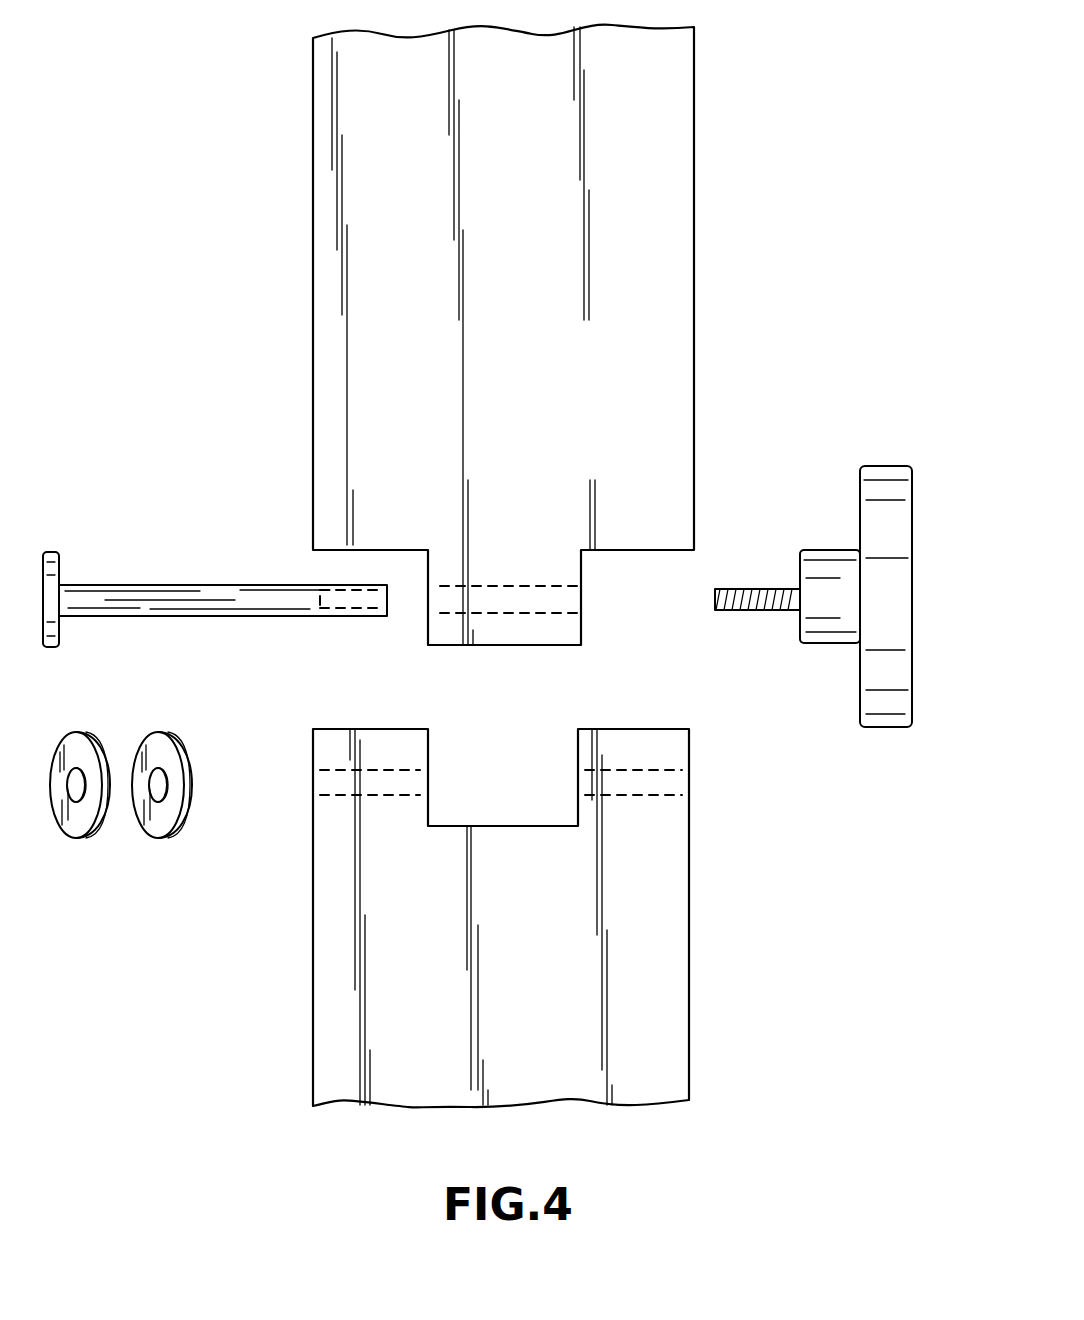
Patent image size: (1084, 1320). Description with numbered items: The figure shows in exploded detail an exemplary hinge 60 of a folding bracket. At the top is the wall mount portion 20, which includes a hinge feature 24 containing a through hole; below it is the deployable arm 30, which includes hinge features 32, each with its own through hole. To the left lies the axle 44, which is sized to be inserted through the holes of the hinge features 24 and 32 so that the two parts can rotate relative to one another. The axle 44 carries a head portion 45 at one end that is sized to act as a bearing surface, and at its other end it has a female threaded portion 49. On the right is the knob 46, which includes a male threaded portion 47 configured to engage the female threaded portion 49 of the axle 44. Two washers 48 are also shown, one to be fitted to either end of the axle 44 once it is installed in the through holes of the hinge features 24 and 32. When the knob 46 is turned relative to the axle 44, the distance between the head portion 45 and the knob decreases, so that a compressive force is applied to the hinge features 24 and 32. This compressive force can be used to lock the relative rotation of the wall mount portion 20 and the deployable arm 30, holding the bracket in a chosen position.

The wall mount portion 20 is at (672, 222).
The hinge feature 24 is at (572, 597).
The deployable arm 30 is at (672, 955).
The hinge features 32 is at (672, 783).
The axle 44 is at (130, 585).
The head portion 45 is at (52, 552).
The knob 46 is at (903, 512).
The male threaded portion 47 is at (743, 617).
The washers 48 is at (85, 838).
The female threaded portion 49 is at (323, 590).
The hinge 60 is at (262, 411).